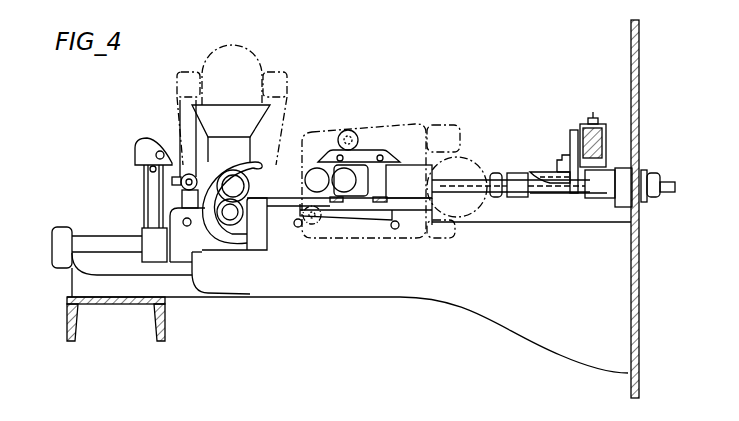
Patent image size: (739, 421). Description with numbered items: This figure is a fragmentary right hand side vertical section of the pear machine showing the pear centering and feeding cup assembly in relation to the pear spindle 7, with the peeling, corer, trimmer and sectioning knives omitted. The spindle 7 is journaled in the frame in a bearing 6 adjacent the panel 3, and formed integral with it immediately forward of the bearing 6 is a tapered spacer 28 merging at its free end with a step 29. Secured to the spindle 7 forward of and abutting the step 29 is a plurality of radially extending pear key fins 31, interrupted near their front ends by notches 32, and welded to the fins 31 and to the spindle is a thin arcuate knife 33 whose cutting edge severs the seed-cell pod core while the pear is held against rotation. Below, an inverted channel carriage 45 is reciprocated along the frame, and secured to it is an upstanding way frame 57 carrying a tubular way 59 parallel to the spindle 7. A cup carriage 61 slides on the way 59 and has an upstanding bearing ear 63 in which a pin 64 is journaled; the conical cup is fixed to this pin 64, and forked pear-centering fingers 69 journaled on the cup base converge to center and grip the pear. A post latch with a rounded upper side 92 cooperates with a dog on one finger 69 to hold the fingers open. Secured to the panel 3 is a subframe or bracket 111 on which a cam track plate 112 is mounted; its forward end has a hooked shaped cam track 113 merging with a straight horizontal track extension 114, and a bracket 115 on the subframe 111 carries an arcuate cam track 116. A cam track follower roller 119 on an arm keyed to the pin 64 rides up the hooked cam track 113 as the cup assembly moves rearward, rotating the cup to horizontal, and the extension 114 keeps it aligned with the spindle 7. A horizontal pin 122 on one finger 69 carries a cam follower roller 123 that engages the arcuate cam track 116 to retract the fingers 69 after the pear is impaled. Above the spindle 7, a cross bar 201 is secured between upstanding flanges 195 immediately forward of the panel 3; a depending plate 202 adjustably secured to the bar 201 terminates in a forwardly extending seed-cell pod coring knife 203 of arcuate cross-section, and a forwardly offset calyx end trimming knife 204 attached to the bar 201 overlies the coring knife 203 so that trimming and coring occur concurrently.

The panel 3 is at (640, 54).
The bearing 6 is at (623, 170).
The pear spindle 7 is at (433, 180).
The tapered spacer 28 is at (565, 193).
The step 29 is at (530, 193).
The pear key fins 31 is at (520, 173).
The notches 32 is at (505, 198).
The arcuate knife 33 is at (495, 173).
The carriage 45 is at (68, 318).
The way frame 57 is at (72, 283).
The way 59 is at (122, 237).
The cup carriage 61 is at (182, 254).
The bearing ear 63 is at (216, 172).
The pin 64 is at (247, 182).
The pear-centering fingers 69 is at (177, 112).
The rounded upper side 92 is at (134, 153).
The subframe or bracket 111 is at (542, 320).
The cam track plate 112 is at (213, 239).
The hooked shaped cam track 113 is at (293, 158).
The track extension 114 is at (339, 195).
The bracket 115 is at (364, 203).
The arcuate cam track 116 is at (323, 158).
The cam track follower roller 119 is at (238, 220).
The pin 122 is at (180, 182).
The cam follower roller 123 is at (183, 190).
The upstanding flange 195 is at (576, 128).
The cross bar 201 is at (597, 138).
The depending plate 202 is at (578, 130).
The seed-cell pod coring knife 203 is at (542, 170).
The calyx end trimming knife 204 is at (562, 158).